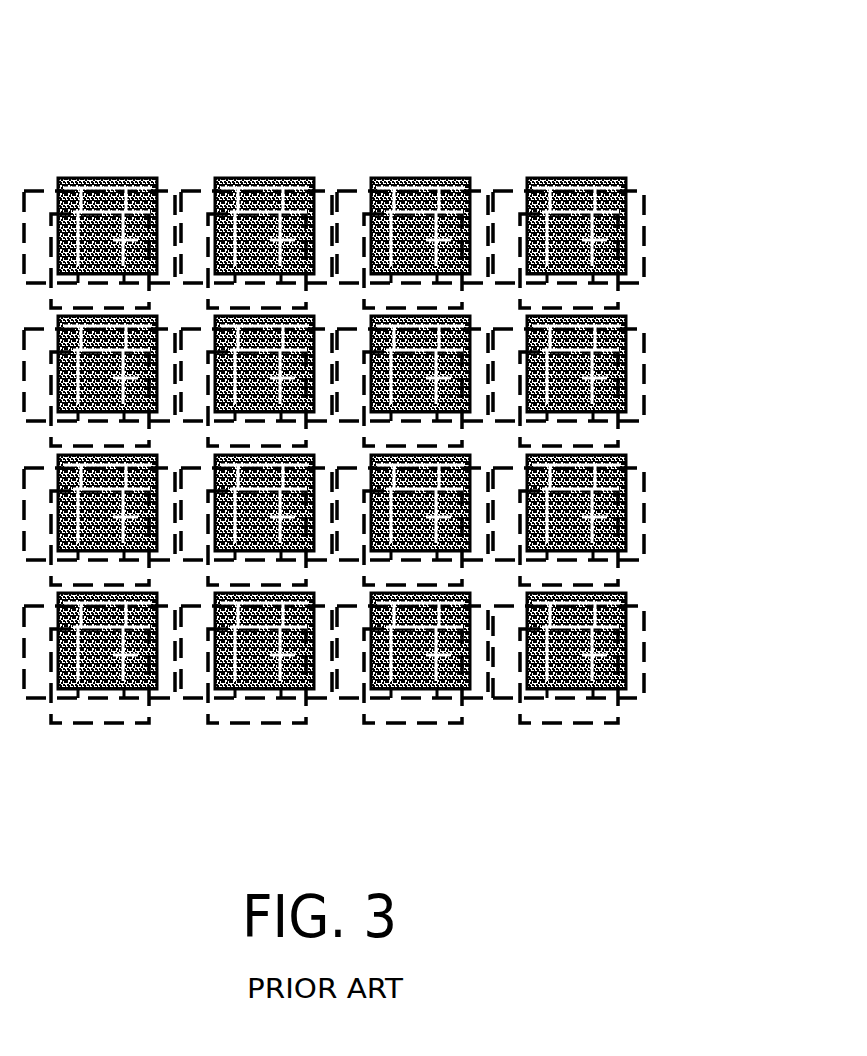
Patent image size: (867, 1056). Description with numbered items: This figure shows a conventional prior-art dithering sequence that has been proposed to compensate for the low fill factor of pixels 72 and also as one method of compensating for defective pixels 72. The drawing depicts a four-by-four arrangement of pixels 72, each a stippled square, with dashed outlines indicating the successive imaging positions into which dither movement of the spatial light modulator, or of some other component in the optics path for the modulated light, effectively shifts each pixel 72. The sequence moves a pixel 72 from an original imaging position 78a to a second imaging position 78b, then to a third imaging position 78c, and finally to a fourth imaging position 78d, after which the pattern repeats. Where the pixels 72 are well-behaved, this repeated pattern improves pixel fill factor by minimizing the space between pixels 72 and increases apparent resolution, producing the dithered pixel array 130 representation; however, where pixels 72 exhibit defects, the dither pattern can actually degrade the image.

The dithered pixel array 130 is at (112, 55).
The pixel 72 is at (153, 178).
The original imaging position 78a is at (626, 593).
The second imaging position 78b is at (645, 652).
The third imaging position 78c is at (615, 723).
The fourth imaging position 78d is at (500, 697).